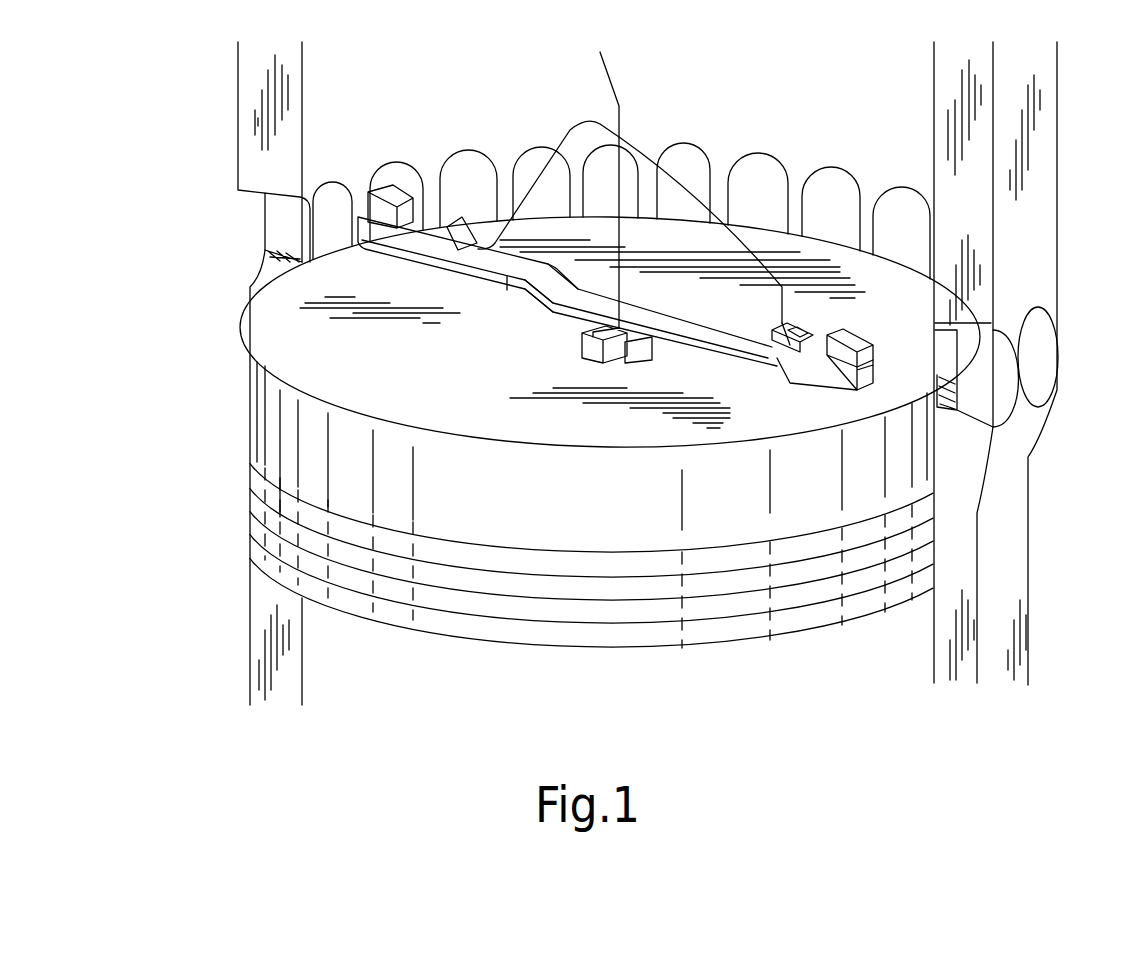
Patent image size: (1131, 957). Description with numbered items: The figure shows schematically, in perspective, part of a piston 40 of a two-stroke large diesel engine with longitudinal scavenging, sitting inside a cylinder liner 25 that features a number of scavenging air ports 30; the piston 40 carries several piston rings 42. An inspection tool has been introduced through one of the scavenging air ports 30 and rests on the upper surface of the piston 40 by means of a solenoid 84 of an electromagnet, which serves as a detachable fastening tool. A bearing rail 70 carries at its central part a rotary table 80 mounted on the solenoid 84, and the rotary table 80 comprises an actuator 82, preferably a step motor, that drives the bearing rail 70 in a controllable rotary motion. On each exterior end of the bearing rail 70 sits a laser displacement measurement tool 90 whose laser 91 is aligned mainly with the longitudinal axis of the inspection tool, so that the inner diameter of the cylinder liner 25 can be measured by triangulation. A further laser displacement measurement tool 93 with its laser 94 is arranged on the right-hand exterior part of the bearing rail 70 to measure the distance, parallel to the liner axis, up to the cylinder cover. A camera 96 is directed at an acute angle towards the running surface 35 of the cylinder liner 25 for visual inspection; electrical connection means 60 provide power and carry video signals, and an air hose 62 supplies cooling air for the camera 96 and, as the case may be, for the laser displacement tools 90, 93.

The cylinder liner 25 is at (1020, 130).
The scavenging air ports 30 is at (330, 225).
The running surface 35 is at (310, 97).
The piston 40 is at (860, 505).
The piston rings 42 is at (883, 590).
The electrical connection means 60 is at (619, 106).
The air hose 62 is at (619, 106).
The bearing rail 70 is at (935, 417).
The rotary table 80 is at (588, 333).
The actuator 82 is at (588, 333).
The solenoid 84 is at (593, 350).
The laser displacement measurement tool 90 is at (373, 203).
The laser 91 is at (863, 368).
The laser displacement measurement tool 93 is at (790, 345).
The laser 94 is at (810, 327).
The camera 96 is at (297, 260).